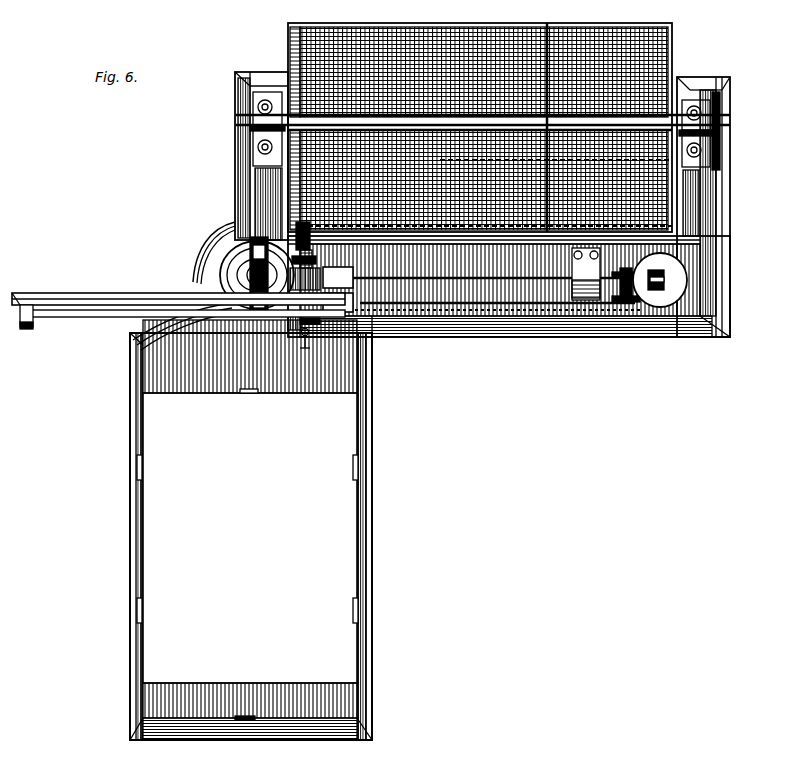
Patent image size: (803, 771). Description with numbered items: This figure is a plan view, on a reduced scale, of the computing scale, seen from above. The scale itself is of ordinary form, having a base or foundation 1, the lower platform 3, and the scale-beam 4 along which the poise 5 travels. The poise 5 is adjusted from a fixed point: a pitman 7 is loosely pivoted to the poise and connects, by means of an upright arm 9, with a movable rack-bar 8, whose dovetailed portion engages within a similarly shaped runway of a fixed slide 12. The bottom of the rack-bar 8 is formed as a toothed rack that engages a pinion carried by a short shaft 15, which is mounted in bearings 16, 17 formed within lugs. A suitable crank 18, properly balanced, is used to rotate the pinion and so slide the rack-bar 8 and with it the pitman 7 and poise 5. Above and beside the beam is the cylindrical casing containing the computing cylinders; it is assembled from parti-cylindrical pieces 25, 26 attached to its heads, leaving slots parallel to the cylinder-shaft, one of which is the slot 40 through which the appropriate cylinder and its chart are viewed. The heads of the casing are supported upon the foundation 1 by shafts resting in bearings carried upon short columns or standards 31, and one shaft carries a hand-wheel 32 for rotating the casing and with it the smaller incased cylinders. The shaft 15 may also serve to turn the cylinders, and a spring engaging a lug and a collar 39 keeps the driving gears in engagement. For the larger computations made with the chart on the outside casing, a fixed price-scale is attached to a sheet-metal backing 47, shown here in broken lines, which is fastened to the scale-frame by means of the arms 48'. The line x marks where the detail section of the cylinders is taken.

The base 1 is at (548, 318).
The lower platform 3 is at (251, 530).
The scale-beam 4 is at (490, 300).
The poise 5 is at (332, 302).
The pitman 7 is at (110, 316).
The rack-bar 8 is at (135, 300).
The upright arm 9 is at (30, 320).
The fixed slide 12 is at (460, 300).
The short shaft 15 is at (302, 240).
The bearing 16 is at (298, 308).
The bearing 17 is at (300, 262).
The crank 18 is at (309, 333).
The parti-cylindrical piece 25 is at (456, 38).
The parti-cylindrical piece 26 is at (480, 127).
The standard 31 is at (253, 128).
The hand-wheel 32 is at (722, 116).
The collar 39 is at (305, 268).
The slot 40 is at (345, 128).
The sheet-metal backing 47 is at (500, 235).
The arm 48' is at (477, 204).
The section line x is at (300, 23).